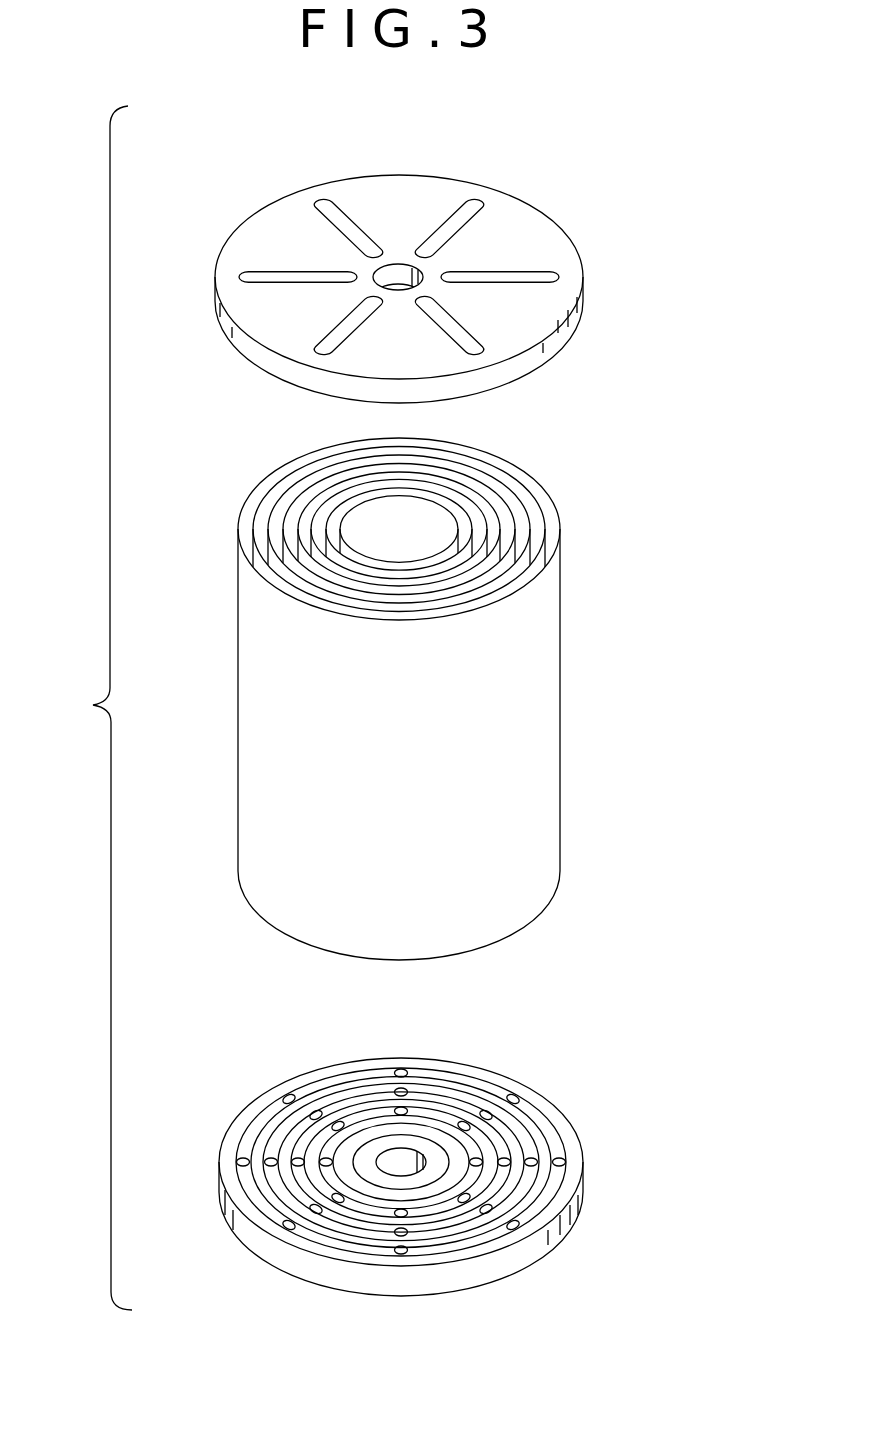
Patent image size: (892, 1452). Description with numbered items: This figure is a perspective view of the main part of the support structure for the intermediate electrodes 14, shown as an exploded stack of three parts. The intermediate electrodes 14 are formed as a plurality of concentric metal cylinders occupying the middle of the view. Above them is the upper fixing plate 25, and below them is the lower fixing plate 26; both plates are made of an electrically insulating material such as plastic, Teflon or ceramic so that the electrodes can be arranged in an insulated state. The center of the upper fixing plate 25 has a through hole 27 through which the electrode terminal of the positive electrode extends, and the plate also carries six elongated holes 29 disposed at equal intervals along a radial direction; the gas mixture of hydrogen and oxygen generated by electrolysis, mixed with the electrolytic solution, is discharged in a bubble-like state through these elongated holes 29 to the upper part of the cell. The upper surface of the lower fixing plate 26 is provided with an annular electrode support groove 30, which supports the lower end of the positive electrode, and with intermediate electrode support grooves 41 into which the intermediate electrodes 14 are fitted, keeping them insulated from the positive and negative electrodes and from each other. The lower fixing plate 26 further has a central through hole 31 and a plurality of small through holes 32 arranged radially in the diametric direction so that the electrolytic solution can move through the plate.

The intermediate electrodes 14 is at (248, 768).
The upper fixing plate 25 is at (246, 248).
The lower fixing plate 26 is at (240, 1130).
The through hole 27 is at (402, 271).
The elongated holes 29 is at (343, 206).
The annular electrode support groove 30 is at (378, 1133).
The through hole 31 is at (407, 1158).
The small through holes 32 is at (510, 1094).
The intermediate electrode support grooves 41 is at (535, 1114).